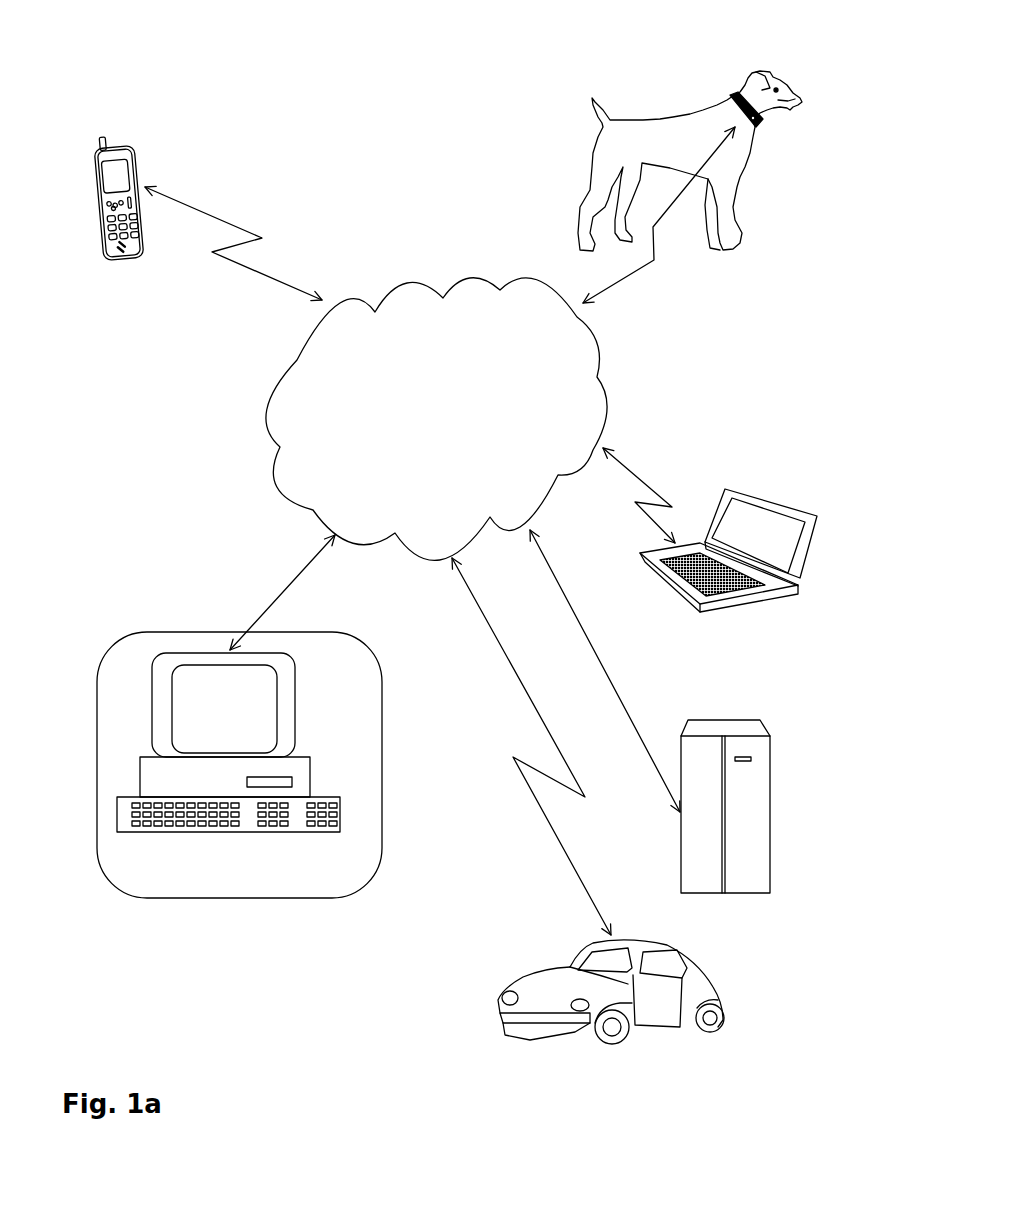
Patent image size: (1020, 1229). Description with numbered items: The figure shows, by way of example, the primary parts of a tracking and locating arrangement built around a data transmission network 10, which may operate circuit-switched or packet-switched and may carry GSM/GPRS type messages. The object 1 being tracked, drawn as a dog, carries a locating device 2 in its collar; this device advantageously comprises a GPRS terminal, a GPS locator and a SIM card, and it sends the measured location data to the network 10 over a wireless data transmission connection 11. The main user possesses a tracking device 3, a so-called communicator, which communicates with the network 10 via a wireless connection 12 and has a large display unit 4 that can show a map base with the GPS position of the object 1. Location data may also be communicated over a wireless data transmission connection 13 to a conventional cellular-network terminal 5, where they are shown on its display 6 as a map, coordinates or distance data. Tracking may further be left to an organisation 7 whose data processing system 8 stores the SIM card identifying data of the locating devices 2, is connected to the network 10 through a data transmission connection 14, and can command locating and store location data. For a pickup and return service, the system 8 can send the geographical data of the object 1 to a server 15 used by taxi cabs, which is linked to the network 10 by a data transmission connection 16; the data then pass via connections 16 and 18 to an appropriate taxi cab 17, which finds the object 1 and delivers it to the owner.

The object being tracked 1 is at (711, 136).
The locating device 2 is at (698, 74).
The tracking device (communicator) 3 is at (751, 517).
The display unit 4 is at (745, 487).
The conventional cellular-network terminal 5 is at (165, 164).
The display 6 is at (122, 135).
The organisation 7 is at (274, 765).
The data processing system 8 is at (387, 773).
The data transmission network 10 is at (436, 366).
The wireless data transmission connection 11 is at (659, 215).
The wireless connection 12 is at (639, 495).
The wireless data transmission connection 13 is at (233, 243).
The data transmission connection 14 is at (282, 592).
The server 15 is at (768, 806).
The data transmission connection 16 is at (605, 671).
The taxi cab 17 is at (653, 970).
The data transmission connection 18 is at (531, 746).